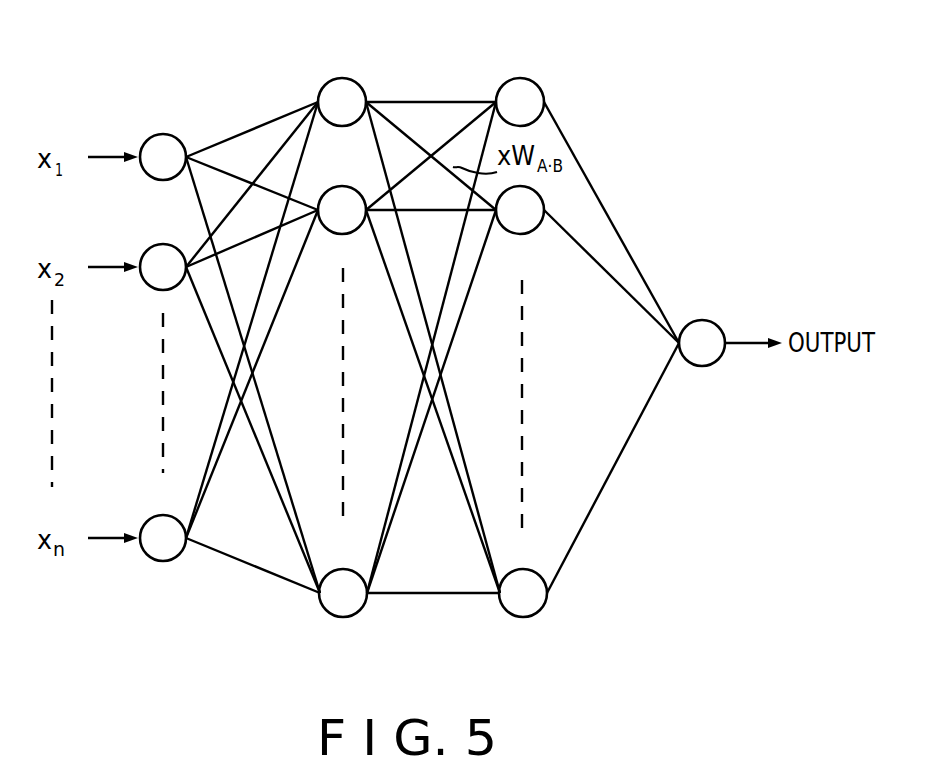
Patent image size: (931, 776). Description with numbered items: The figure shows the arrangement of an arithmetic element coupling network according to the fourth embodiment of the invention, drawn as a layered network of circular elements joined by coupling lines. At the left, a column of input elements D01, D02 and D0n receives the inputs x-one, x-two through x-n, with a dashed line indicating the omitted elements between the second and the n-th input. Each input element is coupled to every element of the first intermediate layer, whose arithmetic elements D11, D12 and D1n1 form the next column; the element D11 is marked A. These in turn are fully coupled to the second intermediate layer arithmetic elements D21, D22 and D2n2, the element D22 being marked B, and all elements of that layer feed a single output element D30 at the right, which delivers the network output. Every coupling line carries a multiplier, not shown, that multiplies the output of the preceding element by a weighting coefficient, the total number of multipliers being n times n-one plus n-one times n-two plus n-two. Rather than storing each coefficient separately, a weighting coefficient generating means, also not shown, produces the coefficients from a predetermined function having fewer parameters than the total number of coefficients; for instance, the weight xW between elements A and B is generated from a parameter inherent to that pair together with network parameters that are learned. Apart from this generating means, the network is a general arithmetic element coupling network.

The input element D01 is at (163, 134).
The input element D02 is at (163, 244).
The input element D0n is at (163, 561).
The first intermediate layer arithmetic element D11 is at (342, 78).
The first intermediate layer arithmetic element D12 is at (342, 186).
The first intermediate layer arithmetic element D1n1 is at (343, 617).
The second intermediate layer arithmetic element D21 is at (541, 82).
The second intermediate layer arithmetic element D22 is at (533, 230).
The second intermediate layer arithmetic element D2n2 is at (523, 617).
The output element D30 is at (700, 320).